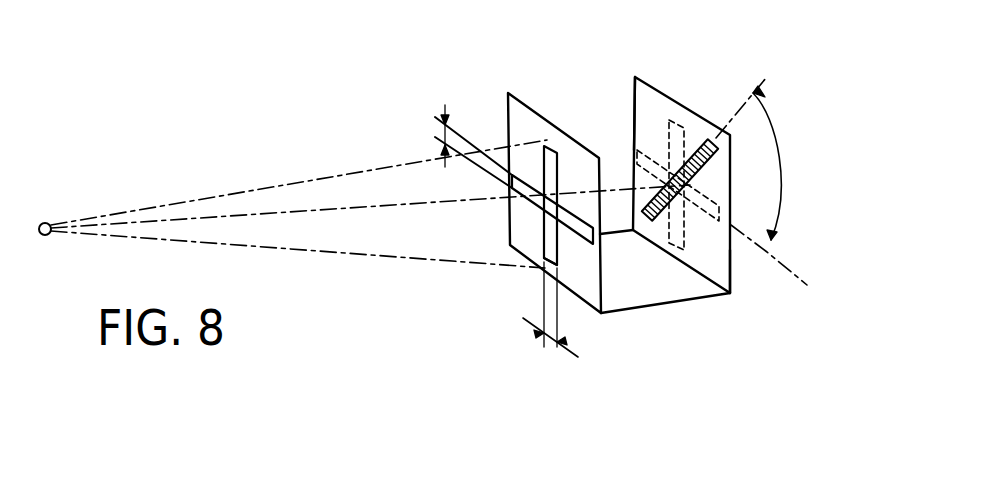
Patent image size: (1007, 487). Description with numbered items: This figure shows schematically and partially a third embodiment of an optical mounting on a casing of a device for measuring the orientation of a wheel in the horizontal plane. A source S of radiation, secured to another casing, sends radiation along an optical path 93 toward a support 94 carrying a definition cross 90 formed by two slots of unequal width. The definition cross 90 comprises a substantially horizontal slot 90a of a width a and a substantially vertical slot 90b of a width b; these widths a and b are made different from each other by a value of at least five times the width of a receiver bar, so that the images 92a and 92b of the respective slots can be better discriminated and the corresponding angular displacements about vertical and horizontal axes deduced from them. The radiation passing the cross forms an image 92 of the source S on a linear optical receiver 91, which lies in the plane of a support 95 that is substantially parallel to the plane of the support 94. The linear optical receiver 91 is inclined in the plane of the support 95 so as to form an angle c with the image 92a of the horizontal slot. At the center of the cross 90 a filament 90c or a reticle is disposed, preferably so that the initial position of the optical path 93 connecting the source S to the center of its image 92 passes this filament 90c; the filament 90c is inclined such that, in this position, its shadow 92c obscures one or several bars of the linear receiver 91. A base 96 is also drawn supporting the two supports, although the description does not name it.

The source of radiation S is at (48, 223).
The optical path 93 is at (258, 213).
The support 94 is at (532, 120).
The definition cross 90 is at (481, 175).
The horizontal slot 90a is at (512, 185).
The vertical slot 90b is at (547, 257).
The filament 90c is at (546, 190).
The width of horizontal slot a is at (473, 131).
The width of vertical slot b is at (563, 321).
The angle c is at (777, 163).
The base plate 96 is at (610, 295).
The image 92 is at (750, 182).
The image of horizontal slot 92a is at (799, 264).
The image of vertical slot 92b is at (705, 140).
The shadow of filament 92c is at (683, 190).
The support 95 is at (639, 100).
The linear optical receiver 91 is at (722, 170).